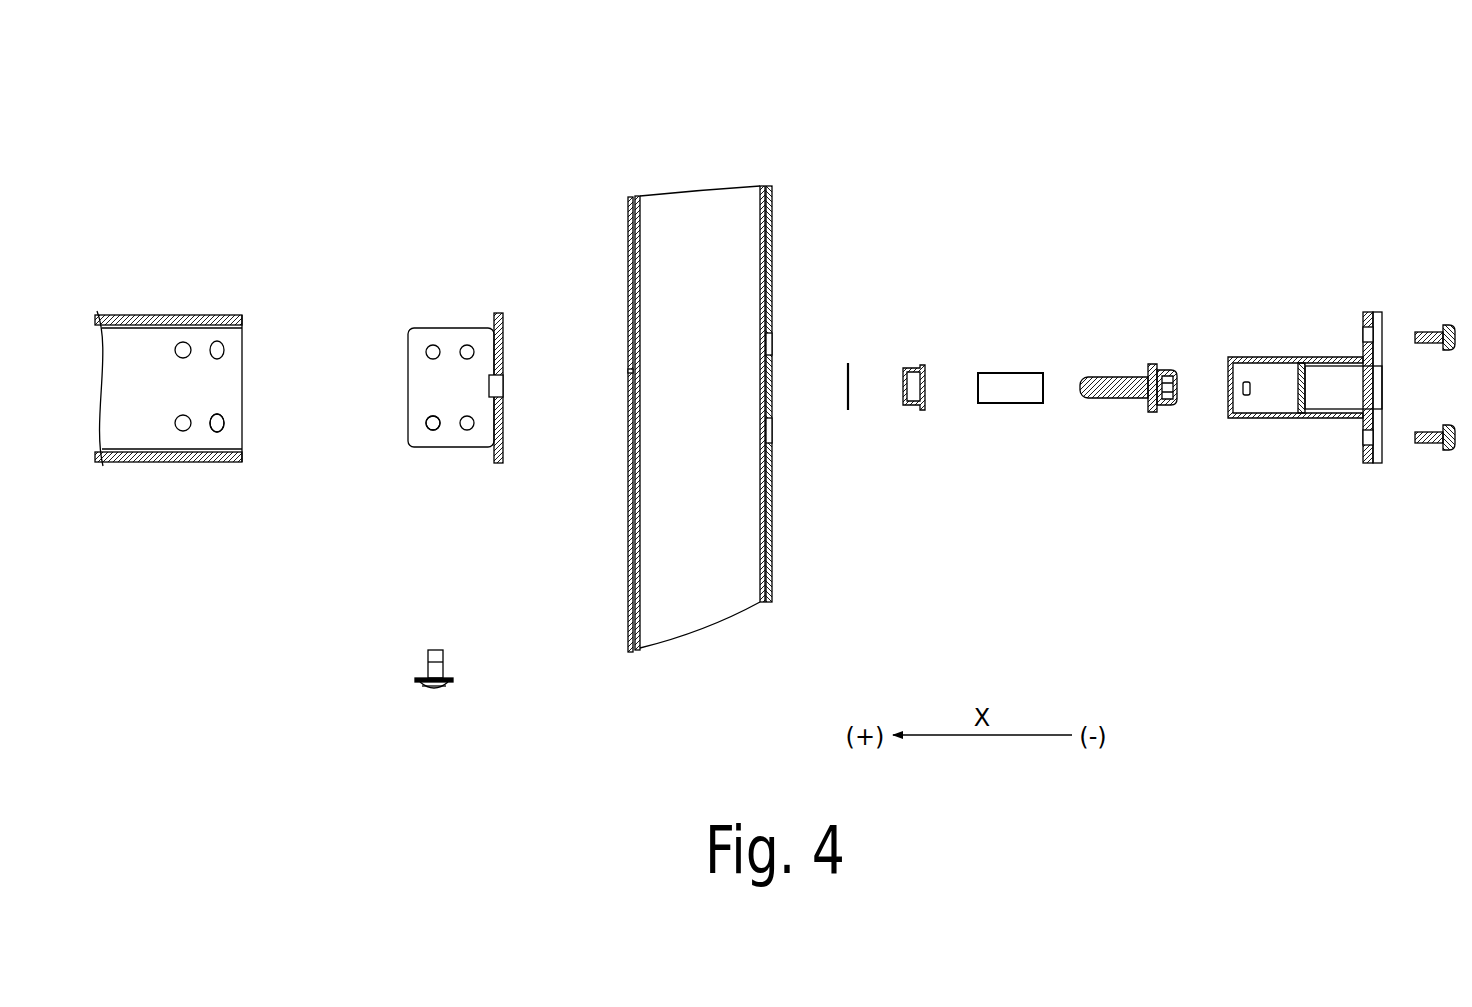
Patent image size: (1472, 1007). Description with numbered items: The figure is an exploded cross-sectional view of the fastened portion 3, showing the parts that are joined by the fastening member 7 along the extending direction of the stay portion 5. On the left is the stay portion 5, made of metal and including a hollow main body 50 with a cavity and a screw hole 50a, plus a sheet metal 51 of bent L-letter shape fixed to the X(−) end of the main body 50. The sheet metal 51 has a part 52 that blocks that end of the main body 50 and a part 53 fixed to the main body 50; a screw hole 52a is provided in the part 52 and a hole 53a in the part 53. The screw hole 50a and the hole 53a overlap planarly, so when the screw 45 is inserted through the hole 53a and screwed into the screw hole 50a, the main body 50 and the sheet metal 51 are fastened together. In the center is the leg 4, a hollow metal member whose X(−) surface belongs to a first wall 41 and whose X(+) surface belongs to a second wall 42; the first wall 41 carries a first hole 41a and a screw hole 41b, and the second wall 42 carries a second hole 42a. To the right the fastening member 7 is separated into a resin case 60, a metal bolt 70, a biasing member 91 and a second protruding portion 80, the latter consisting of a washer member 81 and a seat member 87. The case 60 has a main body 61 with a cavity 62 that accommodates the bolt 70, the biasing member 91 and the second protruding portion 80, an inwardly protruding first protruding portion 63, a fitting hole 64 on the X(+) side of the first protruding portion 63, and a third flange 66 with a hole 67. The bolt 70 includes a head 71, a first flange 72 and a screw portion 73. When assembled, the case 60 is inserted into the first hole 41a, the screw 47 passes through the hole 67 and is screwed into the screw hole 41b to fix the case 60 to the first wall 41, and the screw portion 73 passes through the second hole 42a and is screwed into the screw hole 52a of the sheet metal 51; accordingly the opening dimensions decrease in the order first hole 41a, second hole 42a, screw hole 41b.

The vehicle body structure 3 is at (1274, 71).
The leg 4 is at (608, 122).
The stay portion 5 is at (488, 200).
The fastening member 7 is at (860, 199).
The first wall 41 is at (772, 185).
The first hole 41a is at (759, 390).
The screw hole 41b is at (775, 333).
The second wall 42 is at (627, 195).
The second hole 42a is at (626, 388).
The screw 45 is at (443, 691).
The screw 47 is at (1447, 325).
The main body 50 is at (170, 313).
The screw hole 50a is at (217, 431).
The sheet metal 51 is at (523, 247).
The part 52 is at (500, 313).
The screw hole 52a is at (506, 388).
The part 53 is at (447, 328).
The hole 53a is at (433, 430).
The case 60 is at (1250, 249).
The main body 61 is at (1278, 357).
The cavity 62 is at (1343, 401).
The first protruding portion 63 is at (1290, 420).
The fitting hole 64 is at (1248, 397).
The third flange 66 is at (1380, 312).
The hole 67 is at (1364, 335).
The bolt 70 is at (1207, 247).
The head 71 is at (1168, 370).
The first flange 72 is at (1150, 364).
The screw portion 73 is at (1093, 376).
The second protruding portion 80 is at (935, 247).
The washer member 81 is at (917, 362).
The seat member 87 is at (848, 358).
The biasing member 91 is at (1013, 372).